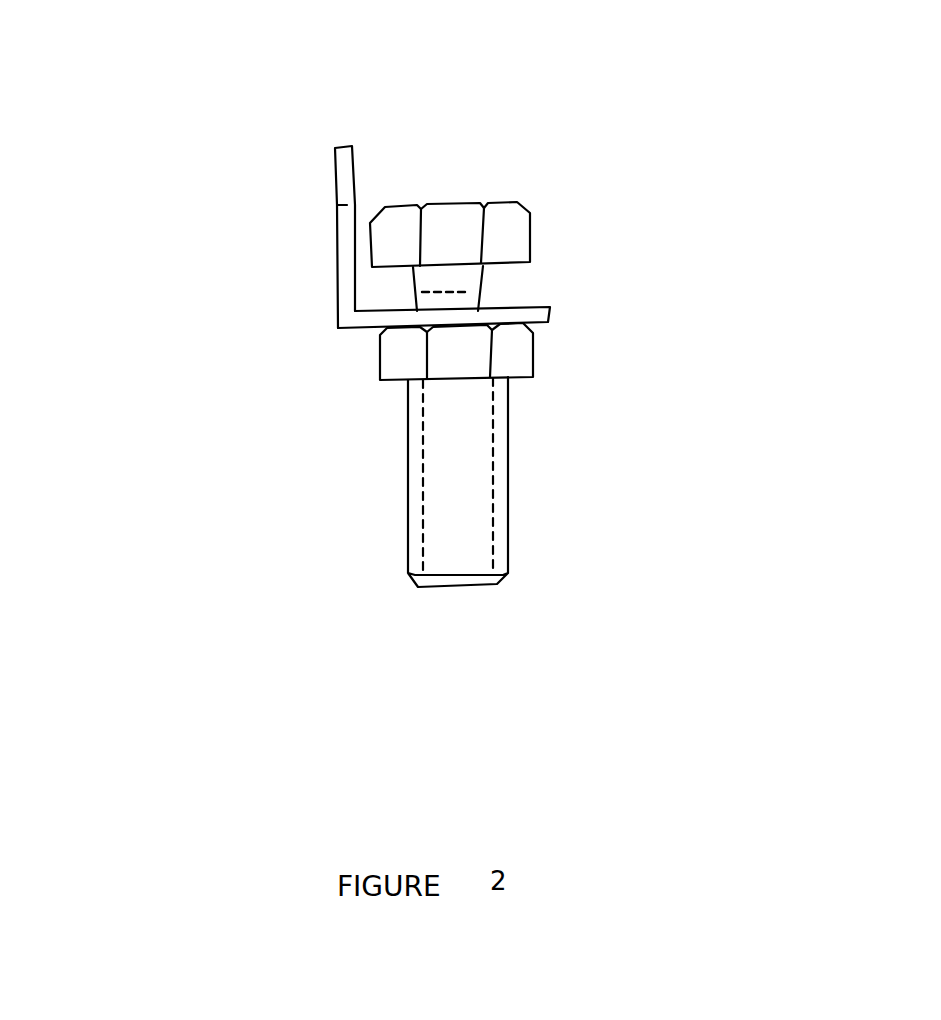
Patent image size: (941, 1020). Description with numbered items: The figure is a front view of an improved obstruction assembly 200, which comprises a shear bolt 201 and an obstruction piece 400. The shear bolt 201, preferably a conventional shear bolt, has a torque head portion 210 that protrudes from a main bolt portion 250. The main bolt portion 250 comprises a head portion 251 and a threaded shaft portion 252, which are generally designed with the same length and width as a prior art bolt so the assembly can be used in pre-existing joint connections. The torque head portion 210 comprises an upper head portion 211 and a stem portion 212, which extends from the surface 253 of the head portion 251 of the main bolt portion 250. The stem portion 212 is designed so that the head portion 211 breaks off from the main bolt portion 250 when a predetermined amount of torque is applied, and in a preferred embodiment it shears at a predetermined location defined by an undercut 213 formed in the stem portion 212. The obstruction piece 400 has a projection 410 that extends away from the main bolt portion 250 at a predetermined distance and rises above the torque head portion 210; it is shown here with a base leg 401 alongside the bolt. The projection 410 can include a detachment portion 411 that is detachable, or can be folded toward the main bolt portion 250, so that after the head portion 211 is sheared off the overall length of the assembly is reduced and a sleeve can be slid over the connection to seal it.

The improved obstruction assembly 200 is at (817, 94).
The shear bolt 201 is at (405, 470).
The torque head portion 210 is at (552, 317).
The head portion 211 is at (465, 215).
The stem portion 212 is at (433, 303).
The undercut 213 is at (463, 293).
The main bolt portion 250 is at (523, 578).
The head portion 251 is at (520, 358).
The threaded shaft portion 252 is at (462, 548).
The surface 253 is at (480, 322).
The obstruction piece 400 is at (333, 305).
The bracket base leg 401 is at (370, 322).
The projection 410 is at (340, 178).
The detachment portion 411 is at (352, 168).